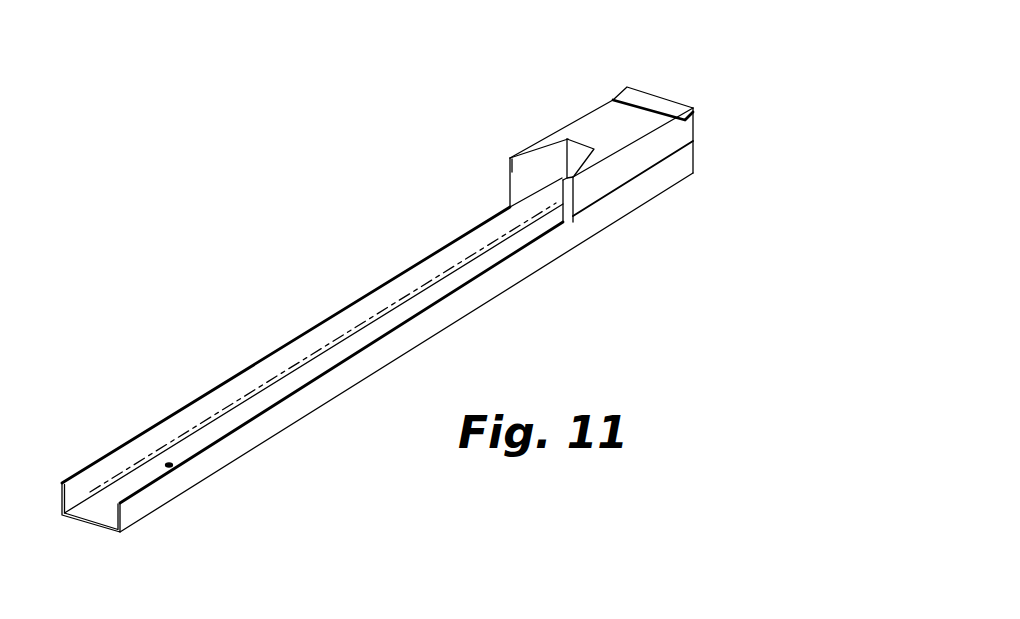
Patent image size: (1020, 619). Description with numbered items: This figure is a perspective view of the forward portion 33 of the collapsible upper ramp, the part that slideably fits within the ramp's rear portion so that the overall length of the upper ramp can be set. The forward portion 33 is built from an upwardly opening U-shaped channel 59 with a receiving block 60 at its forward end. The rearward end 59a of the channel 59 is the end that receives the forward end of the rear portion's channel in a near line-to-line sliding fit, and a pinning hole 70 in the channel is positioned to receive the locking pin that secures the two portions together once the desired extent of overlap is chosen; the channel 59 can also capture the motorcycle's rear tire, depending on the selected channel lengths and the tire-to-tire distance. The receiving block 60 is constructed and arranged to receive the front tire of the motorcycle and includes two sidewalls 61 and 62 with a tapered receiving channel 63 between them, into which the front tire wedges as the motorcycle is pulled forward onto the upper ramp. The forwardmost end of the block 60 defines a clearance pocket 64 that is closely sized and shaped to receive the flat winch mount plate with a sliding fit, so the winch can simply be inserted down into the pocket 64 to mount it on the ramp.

The forward portion 33 is at (305, 279).
The U-shaped channel 59 is at (367, 360).
The rearward end 59a is at (133, 513).
The receiving block 60 is at (626, 167).
The sidewall 61 is at (530, 150).
The sidewall 62 is at (583, 198).
The tapered receiving channel 63 is at (561, 160).
The clearance pocket 64 is at (645, 108).
The pinning hole 70 is at (167, 462).